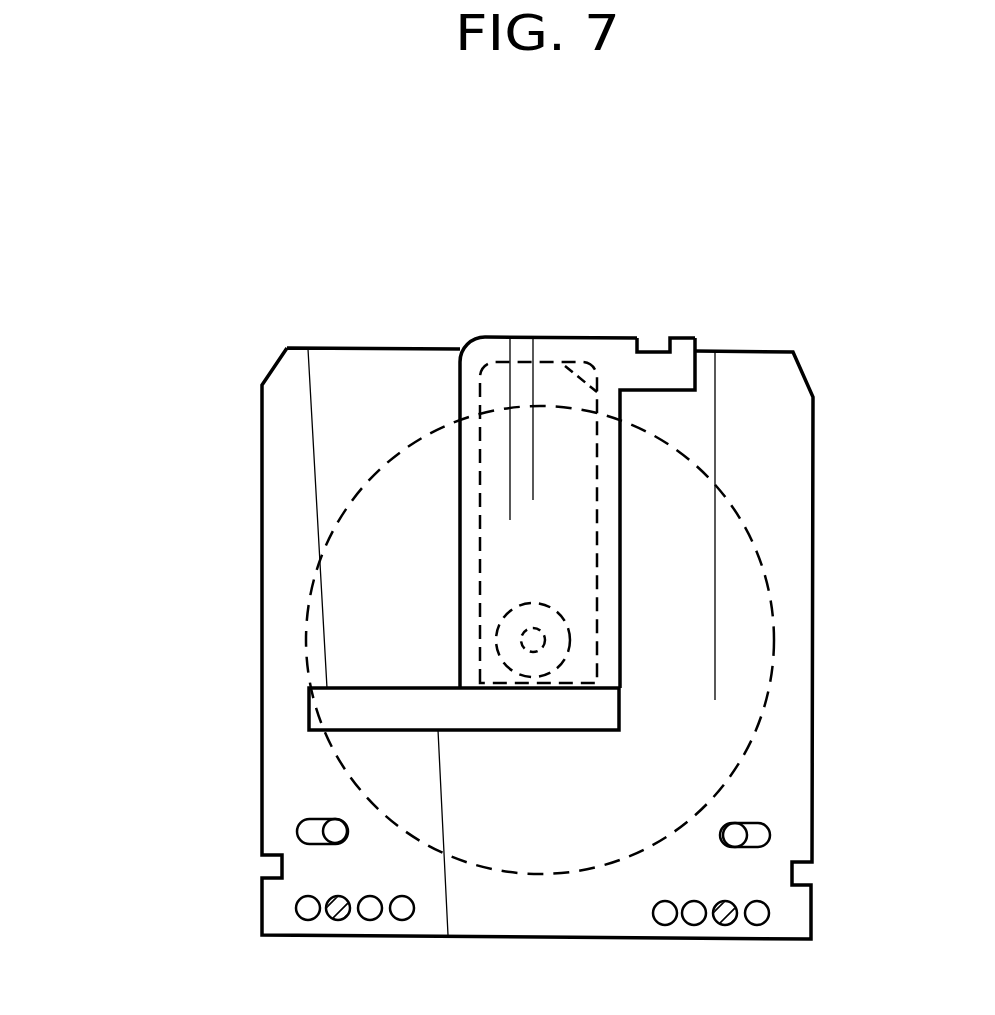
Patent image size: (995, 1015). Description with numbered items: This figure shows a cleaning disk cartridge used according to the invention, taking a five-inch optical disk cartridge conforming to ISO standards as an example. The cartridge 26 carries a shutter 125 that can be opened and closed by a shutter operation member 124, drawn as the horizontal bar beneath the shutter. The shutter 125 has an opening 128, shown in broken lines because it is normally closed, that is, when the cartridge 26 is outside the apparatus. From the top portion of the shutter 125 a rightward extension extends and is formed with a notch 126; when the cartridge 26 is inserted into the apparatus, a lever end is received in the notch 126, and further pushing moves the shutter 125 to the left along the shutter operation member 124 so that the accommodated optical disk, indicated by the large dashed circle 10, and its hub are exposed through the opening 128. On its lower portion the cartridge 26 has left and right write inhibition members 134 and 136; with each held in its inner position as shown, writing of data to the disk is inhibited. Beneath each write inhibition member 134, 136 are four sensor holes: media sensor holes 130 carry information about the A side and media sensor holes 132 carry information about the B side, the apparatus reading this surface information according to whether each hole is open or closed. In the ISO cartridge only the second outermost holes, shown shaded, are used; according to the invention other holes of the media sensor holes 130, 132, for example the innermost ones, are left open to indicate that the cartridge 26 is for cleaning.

The cartridge 26 is at (256, 381).
The disc 10 is at (775, 600).
The shutter operation member 124 is at (330, 700).
The shutter 125 is at (478, 356).
The notch 126 is at (652, 351).
The opening 128 is at (563, 348).
The media sensor holes 130 is at (415, 945).
The media sensor holes 132 is at (773, 948).
The write inhibition member 134 is at (300, 833).
The write inhibition member 136 is at (735, 832).